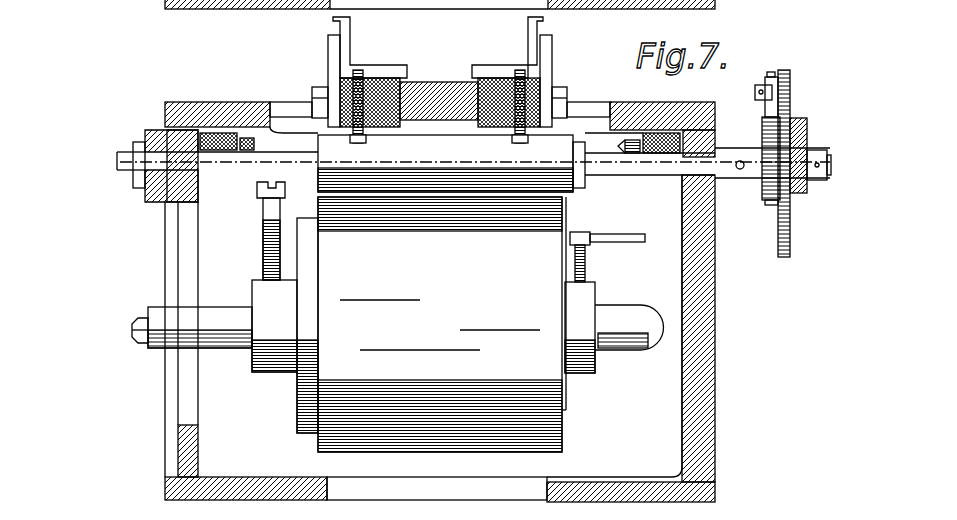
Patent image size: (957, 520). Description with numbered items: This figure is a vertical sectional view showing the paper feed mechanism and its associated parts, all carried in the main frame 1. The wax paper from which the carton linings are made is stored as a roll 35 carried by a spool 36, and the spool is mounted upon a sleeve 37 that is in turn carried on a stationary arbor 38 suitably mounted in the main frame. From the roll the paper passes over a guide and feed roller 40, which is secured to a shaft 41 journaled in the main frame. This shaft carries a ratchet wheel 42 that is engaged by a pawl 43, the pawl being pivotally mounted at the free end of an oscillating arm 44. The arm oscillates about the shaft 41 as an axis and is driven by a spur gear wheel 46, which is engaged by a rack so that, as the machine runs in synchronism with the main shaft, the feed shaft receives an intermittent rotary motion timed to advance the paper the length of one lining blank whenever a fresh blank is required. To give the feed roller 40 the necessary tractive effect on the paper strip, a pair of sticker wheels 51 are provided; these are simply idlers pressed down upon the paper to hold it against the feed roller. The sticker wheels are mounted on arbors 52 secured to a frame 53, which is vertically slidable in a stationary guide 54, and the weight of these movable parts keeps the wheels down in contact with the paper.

The main frame 1 is at (710, 286).
The roll 35 is at (491, 324).
The spool 36 is at (300, 396).
The sleeve 37 is at (222, 340).
The stationary arbor 38 is at (138, 340).
The guide and feed roller 40 is at (583, 178).
The shaft 41 is at (648, 172).
The ratchet wheel 42 is at (770, 206).
The pawl 43 is at (764, 112).
The oscillating arm 44 is at (788, 80).
The spur gear wheel 46 is at (810, 138).
The sticker wheels 51 is at (358, 74).
The arbors 52 is at (312, 100).
The frame 53 is at (334, 46).
The stationary guide 54 is at (352, 36).